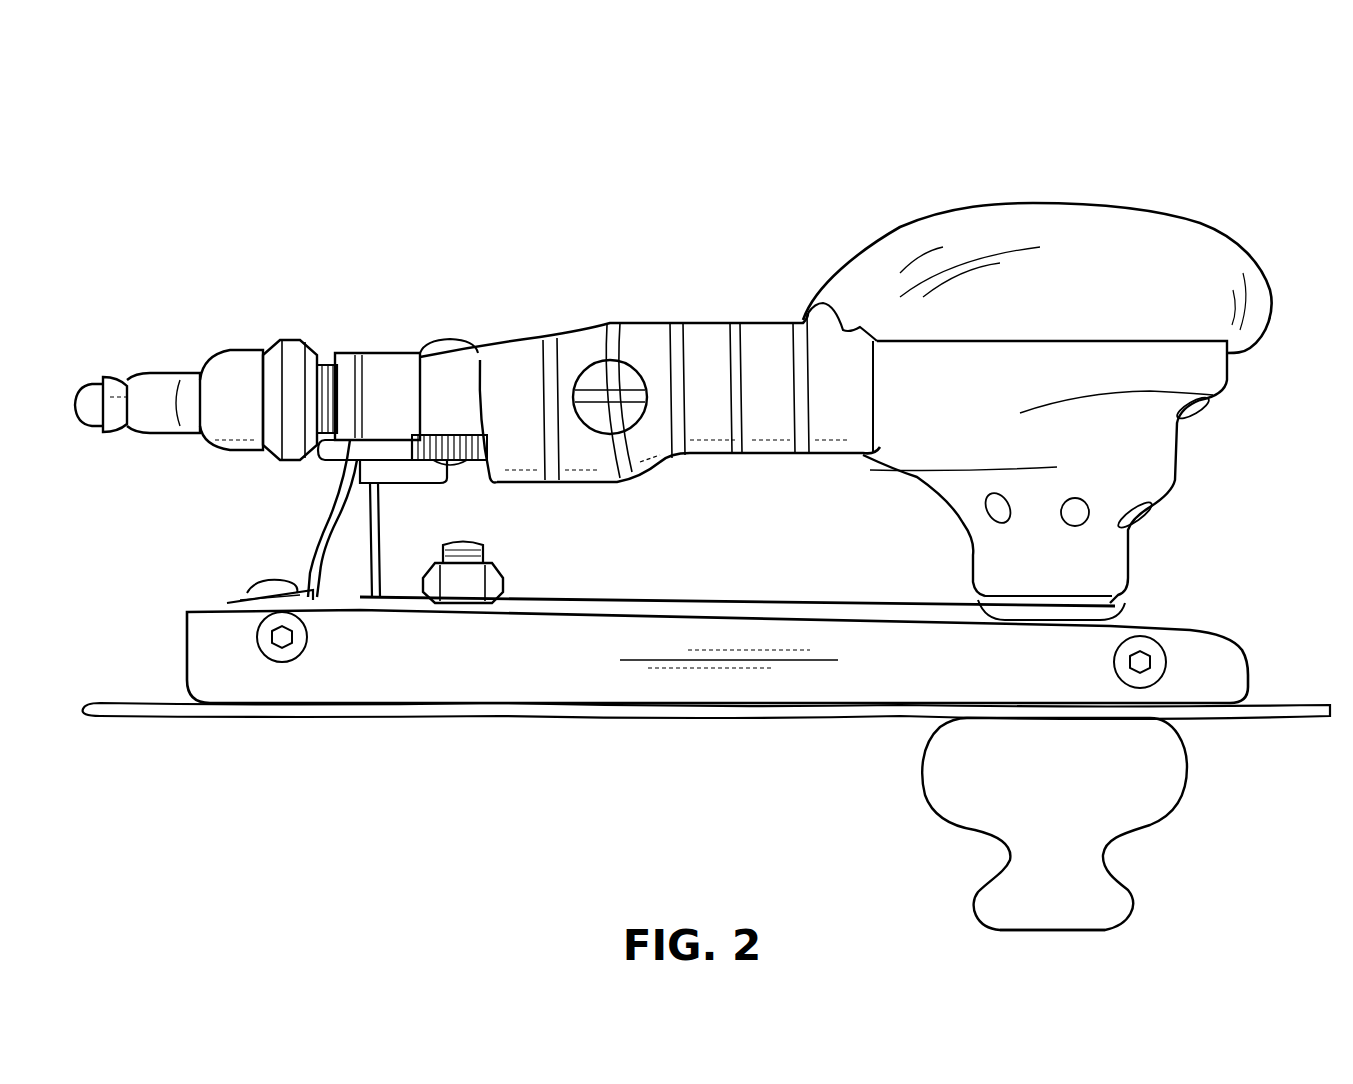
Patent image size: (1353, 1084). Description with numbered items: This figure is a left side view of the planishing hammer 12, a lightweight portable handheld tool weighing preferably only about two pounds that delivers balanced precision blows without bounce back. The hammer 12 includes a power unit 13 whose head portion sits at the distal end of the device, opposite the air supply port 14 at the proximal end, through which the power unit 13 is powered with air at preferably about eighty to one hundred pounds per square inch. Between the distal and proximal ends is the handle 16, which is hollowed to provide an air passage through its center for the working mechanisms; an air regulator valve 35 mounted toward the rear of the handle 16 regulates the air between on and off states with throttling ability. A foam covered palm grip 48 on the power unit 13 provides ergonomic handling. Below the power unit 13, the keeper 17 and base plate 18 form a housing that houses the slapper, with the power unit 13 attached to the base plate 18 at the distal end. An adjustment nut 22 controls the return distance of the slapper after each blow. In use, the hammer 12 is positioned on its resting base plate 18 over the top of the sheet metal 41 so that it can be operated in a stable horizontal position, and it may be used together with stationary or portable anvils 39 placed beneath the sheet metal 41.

The planishing hammer 12 is at (688, 118).
The power unit 13 is at (1147, 468).
The air supply port 14 is at (245, 365).
The handle 16 is at (652, 342).
The keeper 17 is at (398, 678).
The base plate 18 is at (785, 612).
The adjustment nut 22 is at (498, 583).
The air regulator valve 35 is at (473, 458).
The anvil 39 is at (1090, 805).
The sheet metal 41 is at (727, 718).
The palm grip 48 is at (1130, 236).